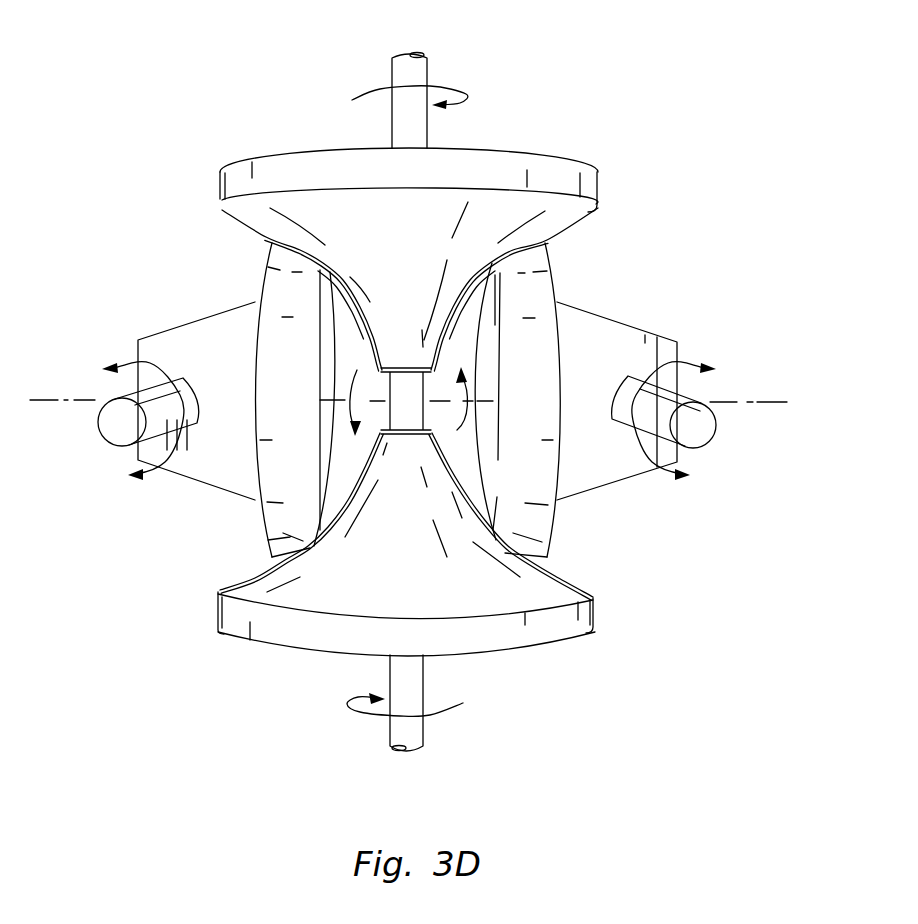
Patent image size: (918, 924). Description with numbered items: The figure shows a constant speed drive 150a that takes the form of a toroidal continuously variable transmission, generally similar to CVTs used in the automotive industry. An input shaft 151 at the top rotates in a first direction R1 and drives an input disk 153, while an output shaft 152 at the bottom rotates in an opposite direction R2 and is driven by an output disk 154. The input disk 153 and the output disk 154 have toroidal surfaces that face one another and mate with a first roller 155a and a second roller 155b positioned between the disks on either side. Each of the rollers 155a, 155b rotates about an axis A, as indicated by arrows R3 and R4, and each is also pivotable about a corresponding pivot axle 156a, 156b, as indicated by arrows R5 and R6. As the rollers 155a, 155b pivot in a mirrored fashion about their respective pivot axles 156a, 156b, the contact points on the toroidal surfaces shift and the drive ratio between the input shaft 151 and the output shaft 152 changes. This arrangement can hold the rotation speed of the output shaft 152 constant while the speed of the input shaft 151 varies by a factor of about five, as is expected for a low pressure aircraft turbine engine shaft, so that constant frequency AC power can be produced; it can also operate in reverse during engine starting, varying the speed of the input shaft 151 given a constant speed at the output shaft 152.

The constant speed drive 150a is at (94, 170).
The input shaft 151 is at (397, 70).
The output shaft 152 is at (420, 732).
The input disk 153 is at (588, 185).
The output disk 154 is at (570, 577).
The first roller 155a is at (530, 290).
The second roller 155b is at (282, 290).
The pivot axle 156a is at (703, 430).
The pivot axle 156b is at (113, 428).
The first direction R1 is at (450, 88).
The opposite direction R2 is at (377, 713).
The arrow R3 is at (458, 387).
The arrow R4 is at (355, 416).
The arrow R5 is at (694, 364).
The arrow R6 is at (120, 362).
The axis A is at (763, 397).